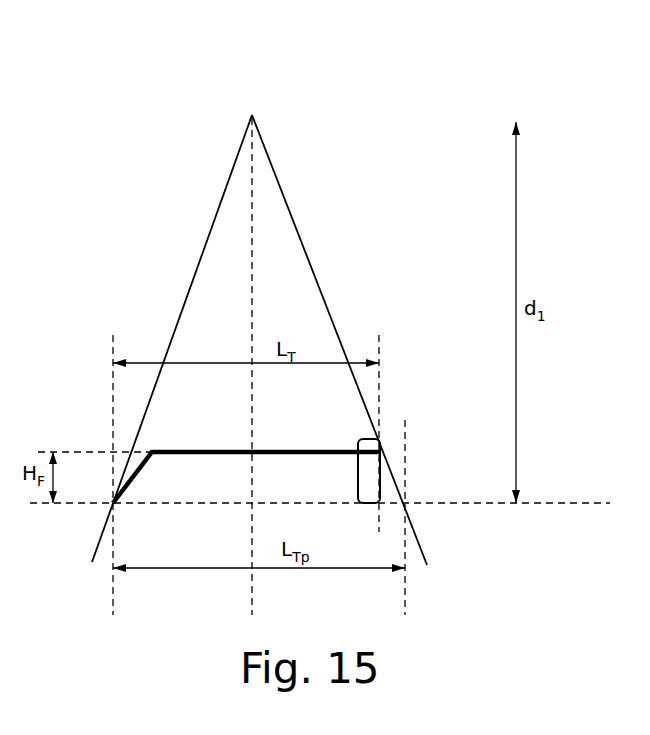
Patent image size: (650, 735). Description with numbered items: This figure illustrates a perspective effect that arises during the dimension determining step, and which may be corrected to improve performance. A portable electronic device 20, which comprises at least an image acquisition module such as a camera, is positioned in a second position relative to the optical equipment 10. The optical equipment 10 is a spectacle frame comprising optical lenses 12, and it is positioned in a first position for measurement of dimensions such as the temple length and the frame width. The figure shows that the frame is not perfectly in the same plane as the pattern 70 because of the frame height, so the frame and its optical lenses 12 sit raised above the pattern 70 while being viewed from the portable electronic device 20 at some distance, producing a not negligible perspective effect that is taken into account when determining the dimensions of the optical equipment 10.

The portable electronic device 20 is at (250, 108).
The optical equipment 10 is at (270, 443).
The optical lenses 12 is at (370, 474).
The pattern 70 is at (189, 506).